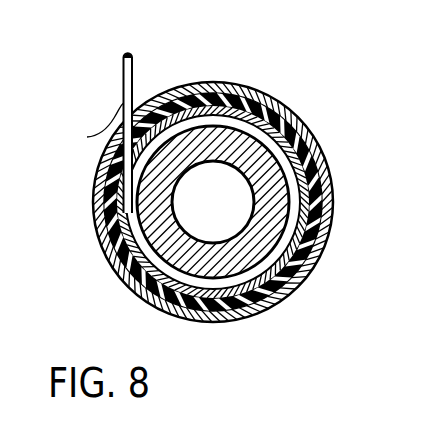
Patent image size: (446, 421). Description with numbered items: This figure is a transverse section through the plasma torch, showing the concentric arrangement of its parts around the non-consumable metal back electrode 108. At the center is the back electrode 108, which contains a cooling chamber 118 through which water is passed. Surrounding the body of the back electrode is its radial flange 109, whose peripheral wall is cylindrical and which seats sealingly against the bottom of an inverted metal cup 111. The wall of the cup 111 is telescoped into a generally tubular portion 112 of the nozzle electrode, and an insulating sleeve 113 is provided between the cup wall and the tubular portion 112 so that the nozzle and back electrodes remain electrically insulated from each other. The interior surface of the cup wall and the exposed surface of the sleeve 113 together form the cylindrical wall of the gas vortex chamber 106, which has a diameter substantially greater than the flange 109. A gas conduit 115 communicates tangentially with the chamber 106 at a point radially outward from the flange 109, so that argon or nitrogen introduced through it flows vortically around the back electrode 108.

The tubular portion 112 is at (243, 90).
The inverted metal cup 111 is at (279, 119).
The insulating sleeve 113 is at (308, 179).
The gas vortex chamber 106 is at (280, 162).
The radial flange 109 is at (280, 228).
The back electrode 108 is at (182, 168).
The cooling chamber 118 is at (222, 230).
The gas conduit 115 is at (107, 156).